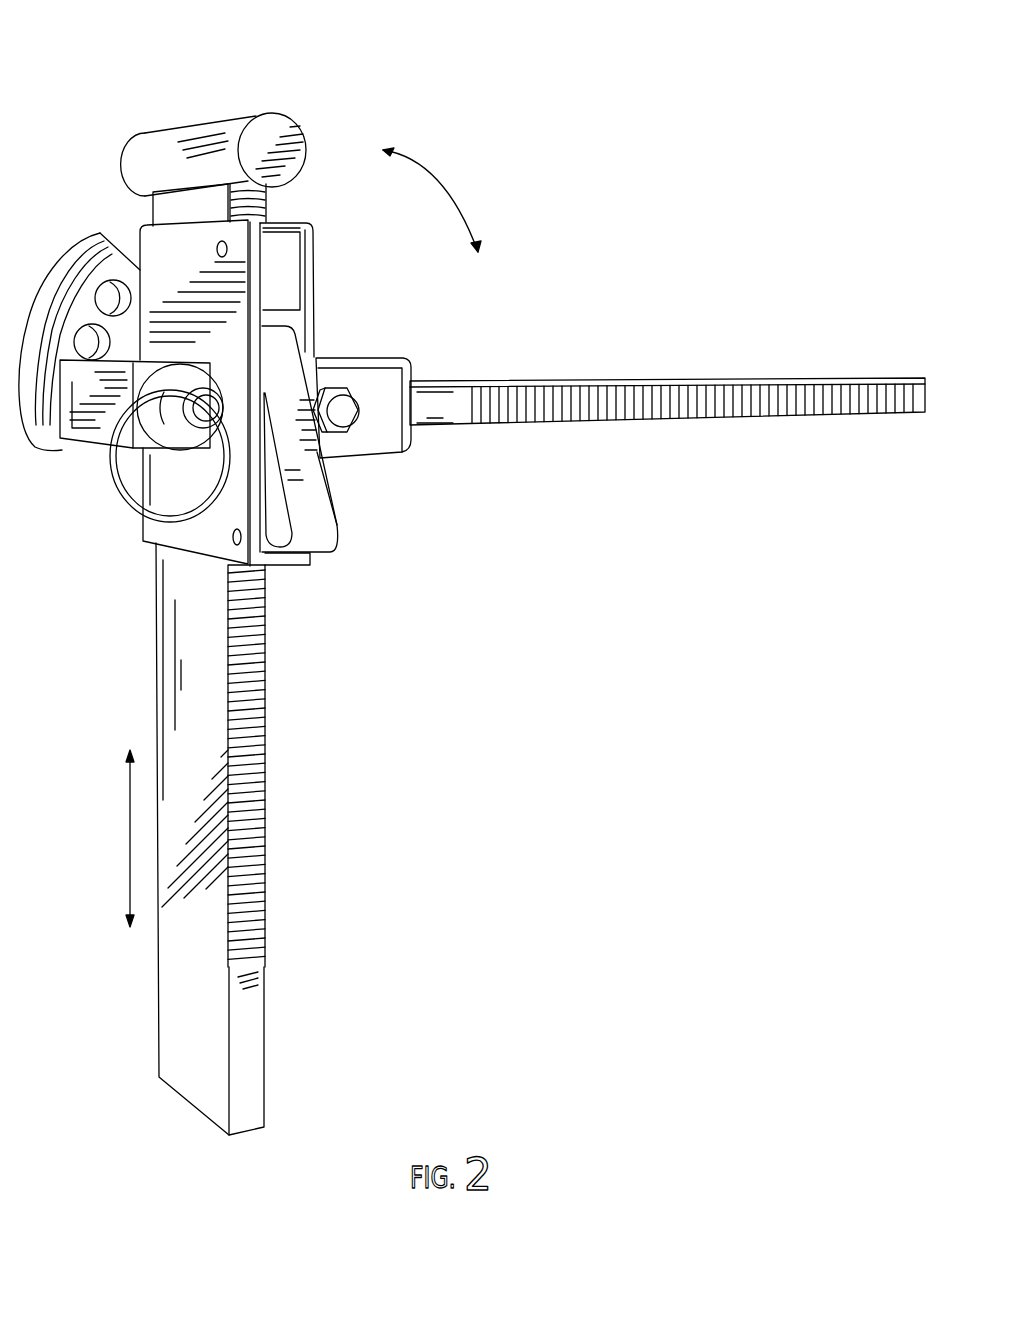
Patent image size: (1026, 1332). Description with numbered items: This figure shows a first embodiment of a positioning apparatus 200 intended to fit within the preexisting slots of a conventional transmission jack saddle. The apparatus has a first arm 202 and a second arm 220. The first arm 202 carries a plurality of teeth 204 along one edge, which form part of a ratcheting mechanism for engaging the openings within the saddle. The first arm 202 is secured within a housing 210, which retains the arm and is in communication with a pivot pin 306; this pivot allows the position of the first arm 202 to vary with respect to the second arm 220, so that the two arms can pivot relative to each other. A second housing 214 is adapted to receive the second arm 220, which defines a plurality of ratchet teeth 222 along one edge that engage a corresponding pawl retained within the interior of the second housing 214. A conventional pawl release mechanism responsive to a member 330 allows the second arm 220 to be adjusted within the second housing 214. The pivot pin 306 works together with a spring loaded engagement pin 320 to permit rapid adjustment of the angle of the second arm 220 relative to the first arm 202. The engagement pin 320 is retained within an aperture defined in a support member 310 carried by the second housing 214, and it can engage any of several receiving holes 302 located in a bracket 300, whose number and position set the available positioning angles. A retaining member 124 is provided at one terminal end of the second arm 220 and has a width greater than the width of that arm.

The positioning apparatus 200 is at (117, 62).
The retaining member 124 is at (268, 116).
The bracket 300 is at (75, 248).
The receiving holes 302 is at (77, 336).
The second housing 214 is at (195, 541).
The pawl release member 330 is at (318, 540).
The support member 310 is at (80, 433).
The spring loaded engagement pin 320 is at (173, 417).
The housing 210 is at (393, 428).
The pivot pin 306 is at (345, 418).
The first arm 202 is at (440, 383).
The teeth 204 is at (582, 408).
The ratchet teeth 222 is at (265, 830).
The second arm 220 is at (258, 1038).